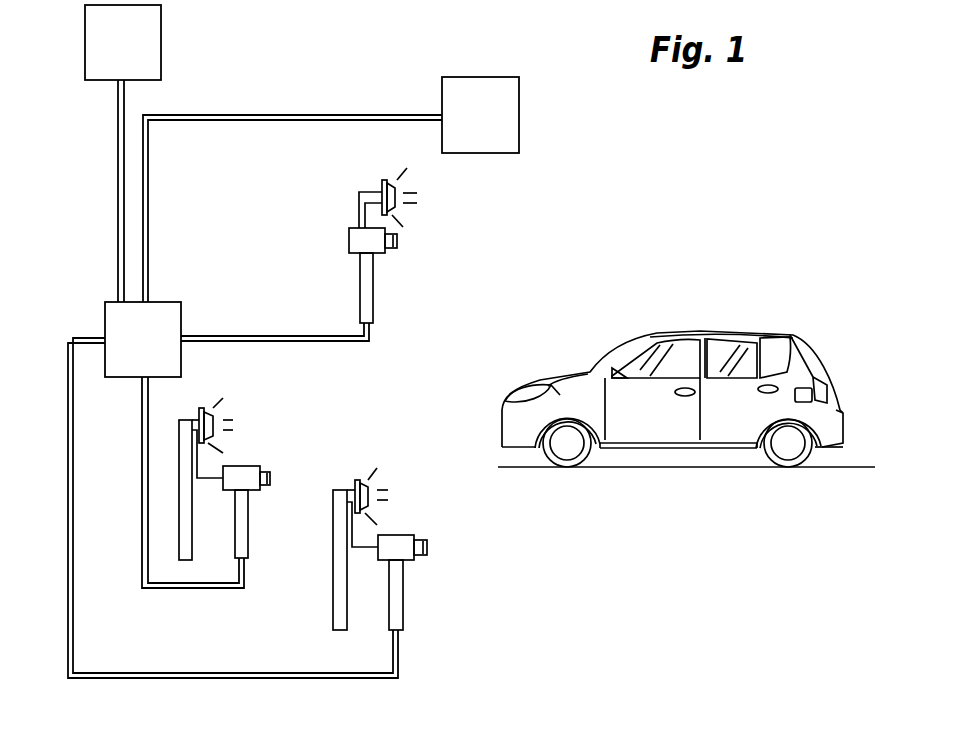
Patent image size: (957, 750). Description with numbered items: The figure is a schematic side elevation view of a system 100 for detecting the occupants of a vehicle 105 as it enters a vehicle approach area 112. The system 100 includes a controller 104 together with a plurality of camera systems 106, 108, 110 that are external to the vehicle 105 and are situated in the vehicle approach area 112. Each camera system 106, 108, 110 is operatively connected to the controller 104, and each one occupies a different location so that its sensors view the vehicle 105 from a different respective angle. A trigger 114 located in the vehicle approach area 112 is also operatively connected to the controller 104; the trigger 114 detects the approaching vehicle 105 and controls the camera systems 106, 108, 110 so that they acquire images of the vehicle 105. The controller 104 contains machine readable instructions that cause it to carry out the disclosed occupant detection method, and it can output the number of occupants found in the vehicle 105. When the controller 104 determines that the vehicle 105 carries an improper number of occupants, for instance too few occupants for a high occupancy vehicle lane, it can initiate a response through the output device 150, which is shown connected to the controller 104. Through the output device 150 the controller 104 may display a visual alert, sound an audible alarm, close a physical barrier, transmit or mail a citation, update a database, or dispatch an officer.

The system 100 is at (634, 170).
The controller 104 is at (162, 359).
The vehicle 105 is at (763, 333).
The camera system 106 is at (342, 214).
The camera system 108 is at (321, 489).
The camera system 110 is at (243, 385).
The vehicle approach area 112 is at (633, 318).
The trigger 114 is at (501, 132).
The output device 150 is at (143, 60).